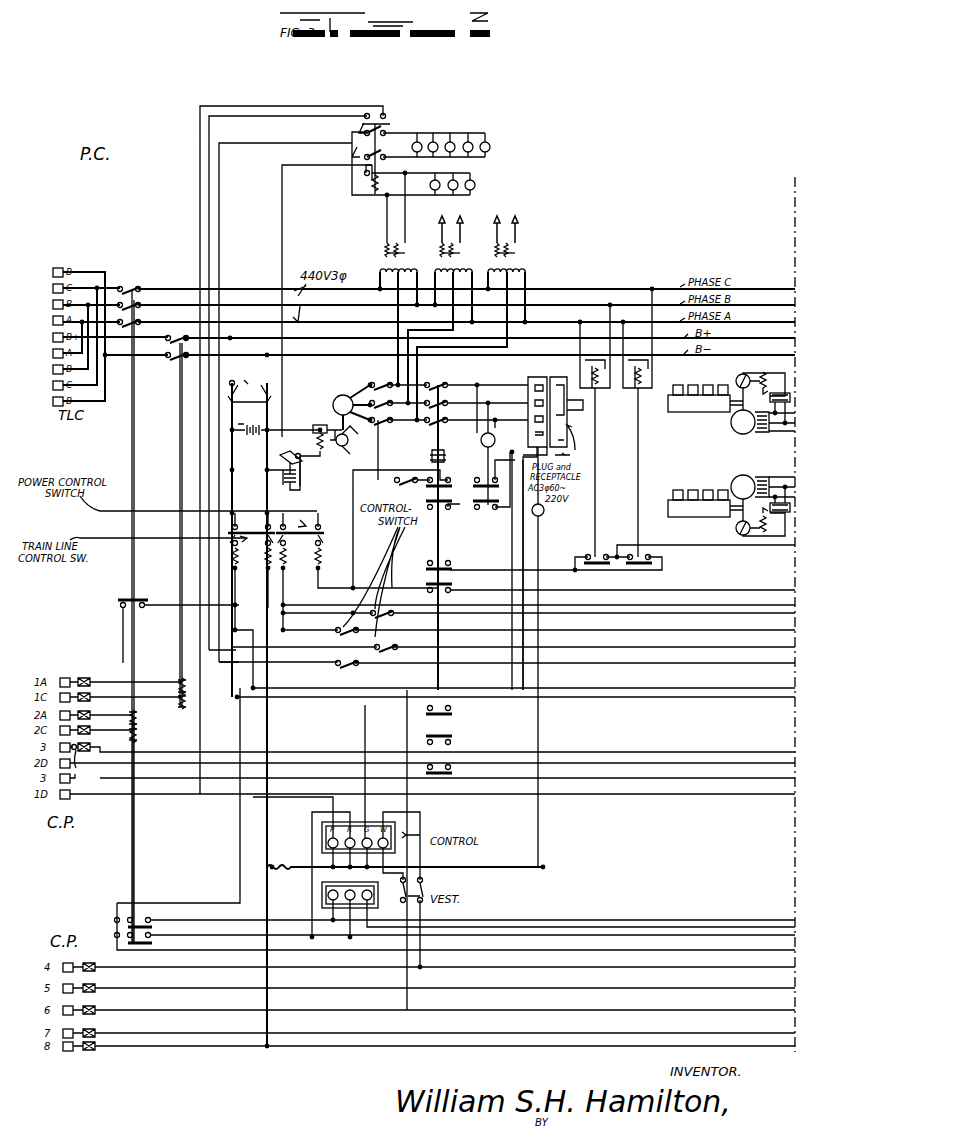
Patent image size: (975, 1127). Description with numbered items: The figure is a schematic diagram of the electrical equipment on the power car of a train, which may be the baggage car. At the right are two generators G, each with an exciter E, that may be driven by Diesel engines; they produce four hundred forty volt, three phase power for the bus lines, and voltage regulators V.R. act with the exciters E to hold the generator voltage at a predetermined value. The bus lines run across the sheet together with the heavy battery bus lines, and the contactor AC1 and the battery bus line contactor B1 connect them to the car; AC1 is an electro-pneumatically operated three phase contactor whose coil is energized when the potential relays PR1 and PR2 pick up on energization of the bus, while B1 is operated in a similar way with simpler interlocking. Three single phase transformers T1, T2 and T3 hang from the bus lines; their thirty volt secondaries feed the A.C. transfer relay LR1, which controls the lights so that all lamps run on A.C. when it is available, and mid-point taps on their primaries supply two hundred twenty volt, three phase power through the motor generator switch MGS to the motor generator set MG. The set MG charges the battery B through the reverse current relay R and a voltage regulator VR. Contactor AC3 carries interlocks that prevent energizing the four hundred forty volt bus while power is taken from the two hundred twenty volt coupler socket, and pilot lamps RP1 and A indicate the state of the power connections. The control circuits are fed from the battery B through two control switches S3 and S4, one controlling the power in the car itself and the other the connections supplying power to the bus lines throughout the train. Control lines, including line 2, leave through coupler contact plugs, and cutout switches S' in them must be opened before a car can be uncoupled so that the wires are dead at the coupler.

The power bus line contactor AC1 is at (126, 604).
The battery bus line contactor B1 is at (167, 522).
The A.C. transfer relay LR1 is at (420, 164).
The single phase lighting transformer T1 is at (398, 310).
The single phase lighting transformer T2 is at (440, 309).
The single phase lighting transformer T3 is at (471, 318).
The motor generator set MG is at (380, 375).
The motor generator switch MGS is at (399, 432).
The contactor AC3 is at (438, 381).
The pilot lamp RP1 is at (478, 449).
The potential relay PR1 is at (595, 434).
The potential relay PR2 is at (637, 426).
The battery B is at (274, 713).
The voltage regulator VR is at (327, 448).
The reverse current relay R is at (291, 479).
The control switch S4 is at (251, 571).
The control switch S3 is at (357, 571).
The generator G is at (721, 421).
The exciter E is at (731, 375).
The voltage regulator V.R. is at (782, 503).
The indicating lamp A is at (542, 508).
The control line 2 is at (142, 726).
The cutout switch S' is at (437, 878).